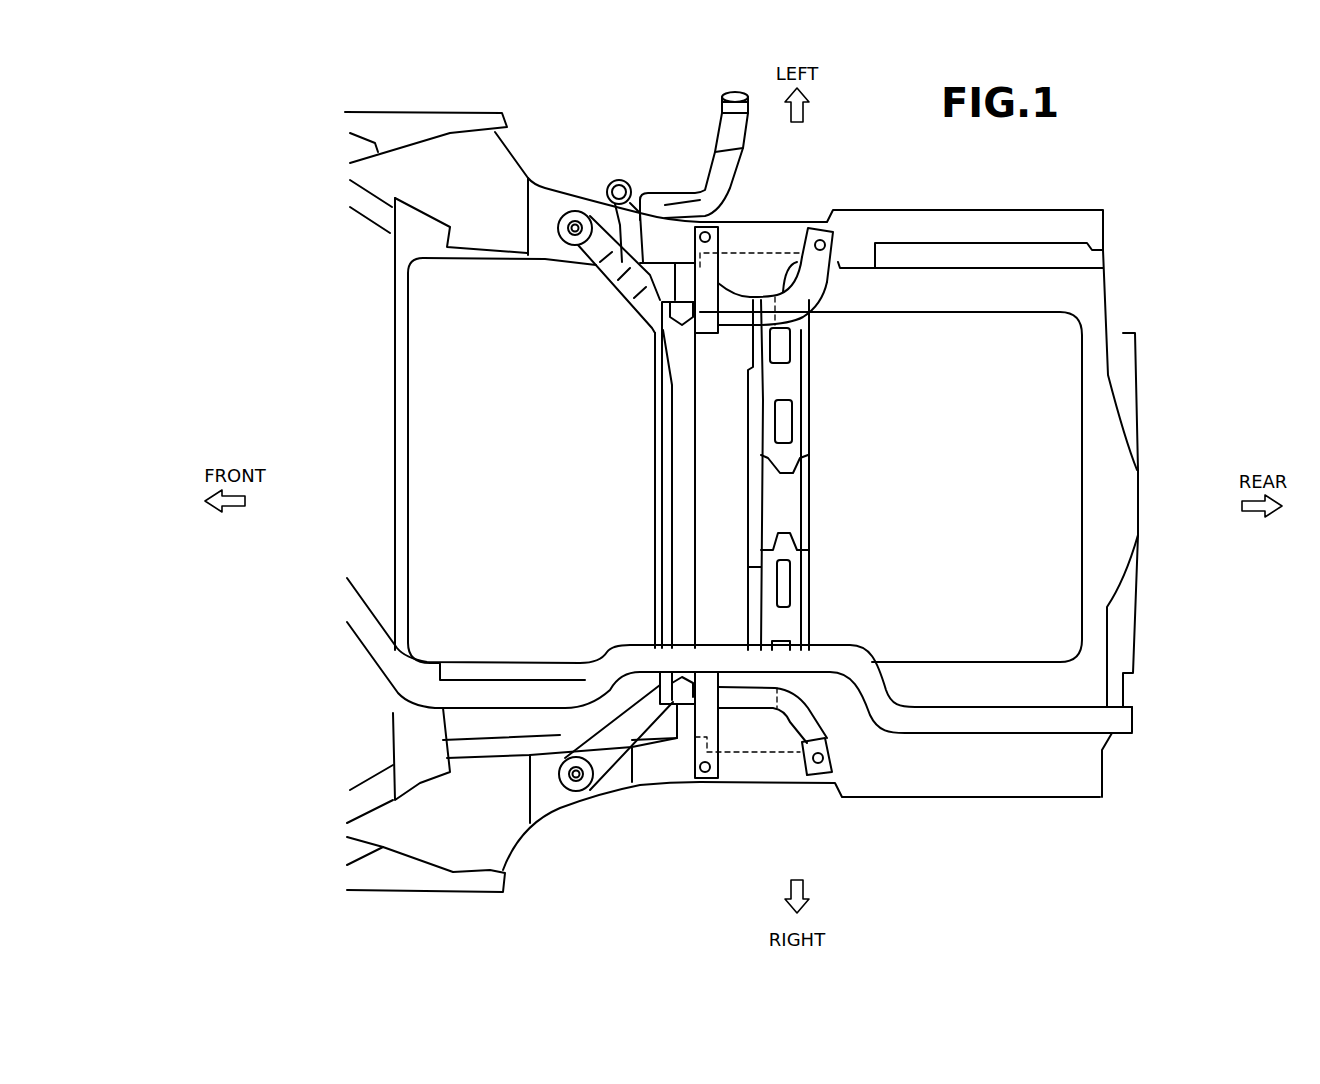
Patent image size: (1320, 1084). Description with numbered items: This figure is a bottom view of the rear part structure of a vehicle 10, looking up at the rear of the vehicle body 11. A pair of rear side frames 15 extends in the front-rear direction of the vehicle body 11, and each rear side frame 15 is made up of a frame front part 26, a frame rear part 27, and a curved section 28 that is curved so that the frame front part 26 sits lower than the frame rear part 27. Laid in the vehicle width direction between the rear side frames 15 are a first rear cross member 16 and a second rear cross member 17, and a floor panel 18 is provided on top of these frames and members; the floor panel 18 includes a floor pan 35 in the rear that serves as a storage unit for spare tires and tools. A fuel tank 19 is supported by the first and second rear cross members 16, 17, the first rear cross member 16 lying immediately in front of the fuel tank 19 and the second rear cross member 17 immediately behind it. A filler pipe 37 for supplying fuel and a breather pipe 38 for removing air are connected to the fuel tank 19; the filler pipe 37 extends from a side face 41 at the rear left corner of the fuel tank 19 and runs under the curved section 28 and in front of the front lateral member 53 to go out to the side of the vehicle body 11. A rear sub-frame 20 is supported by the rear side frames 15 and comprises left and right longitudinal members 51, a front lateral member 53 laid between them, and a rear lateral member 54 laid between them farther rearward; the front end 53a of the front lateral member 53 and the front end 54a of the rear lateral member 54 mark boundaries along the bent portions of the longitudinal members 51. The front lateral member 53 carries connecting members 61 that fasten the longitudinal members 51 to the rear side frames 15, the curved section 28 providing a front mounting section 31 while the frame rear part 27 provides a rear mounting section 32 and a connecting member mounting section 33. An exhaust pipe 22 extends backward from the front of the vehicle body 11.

The vehicle 10 is at (183, 120).
The vehicle body 11 is at (320, 245).
The rear side frames 15 is at (700, 103).
The first rear cross member 16 is at (393, 370).
The second rear cross member 17 is at (655, 598).
The floor panel 18 is at (1033, 273).
The fuel tank 19 is at (430, 352).
The rear sub-frame 20 is at (973, 353).
The exhaust pipe 22 is at (360, 645).
The frame front part 26 is at (512, 151).
The frame rear part 27 is at (663, 223).
The curved section 28 is at (562, 186).
The front mounting section 31 is at (587, 200).
The rear mounting section 32 is at (821, 227).
The connecting member mounting section 33 is at (723, 226).
The floor pan 35 is at (1075, 315).
The filler pipe 37 is at (622, 180).
The breather pipe 38 is at (648, 192).
The side face 41 is at (593, 277).
The longitudinal members 51 is at (823, 285).
The front lateral member 53 is at (700, 380).
The front end of the front lateral member 53a is at (670, 488).
The rear lateral member 54 is at (813, 479).
The front end of the rear lateral member 54a is at (760, 567).
The connecting members 61 is at (732, 318).